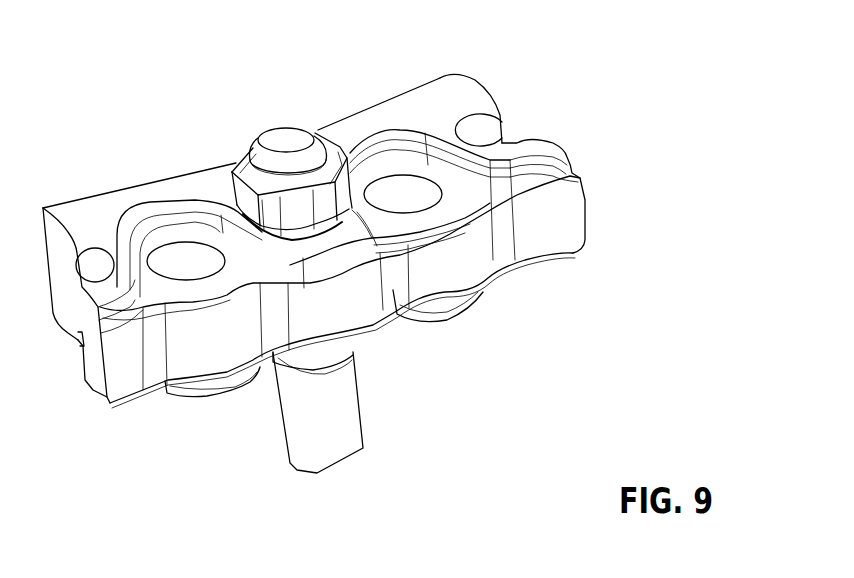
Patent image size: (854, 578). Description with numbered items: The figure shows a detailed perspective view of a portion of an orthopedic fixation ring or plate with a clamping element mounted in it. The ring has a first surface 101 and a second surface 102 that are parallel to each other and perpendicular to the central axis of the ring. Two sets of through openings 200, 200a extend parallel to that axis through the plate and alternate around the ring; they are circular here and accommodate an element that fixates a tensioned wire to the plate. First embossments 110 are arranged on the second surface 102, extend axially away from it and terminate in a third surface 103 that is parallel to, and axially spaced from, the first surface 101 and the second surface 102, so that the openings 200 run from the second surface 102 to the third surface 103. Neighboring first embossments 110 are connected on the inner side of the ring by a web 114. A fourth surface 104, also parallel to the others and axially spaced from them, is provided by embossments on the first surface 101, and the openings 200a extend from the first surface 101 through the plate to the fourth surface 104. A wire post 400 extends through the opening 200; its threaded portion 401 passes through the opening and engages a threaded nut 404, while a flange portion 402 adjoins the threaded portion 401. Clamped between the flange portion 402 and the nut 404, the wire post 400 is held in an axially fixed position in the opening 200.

The first surface 101 is at (128, 406).
The second surface 102 is at (448, 198).
The third surface 103 is at (315, 235).
The fourth surface 104 is at (218, 405).
The first embossments 110 is at (300, 233).
The web 114 is at (147, 200).
The through openings 200 is at (503, 142).
The through openings 200a is at (407, 185).
The wire post 400 is at (353, 440).
The threaded portion 401 is at (300, 165).
The flange portion 402 is at (355, 355).
The threaded nut 404 is at (245, 193).